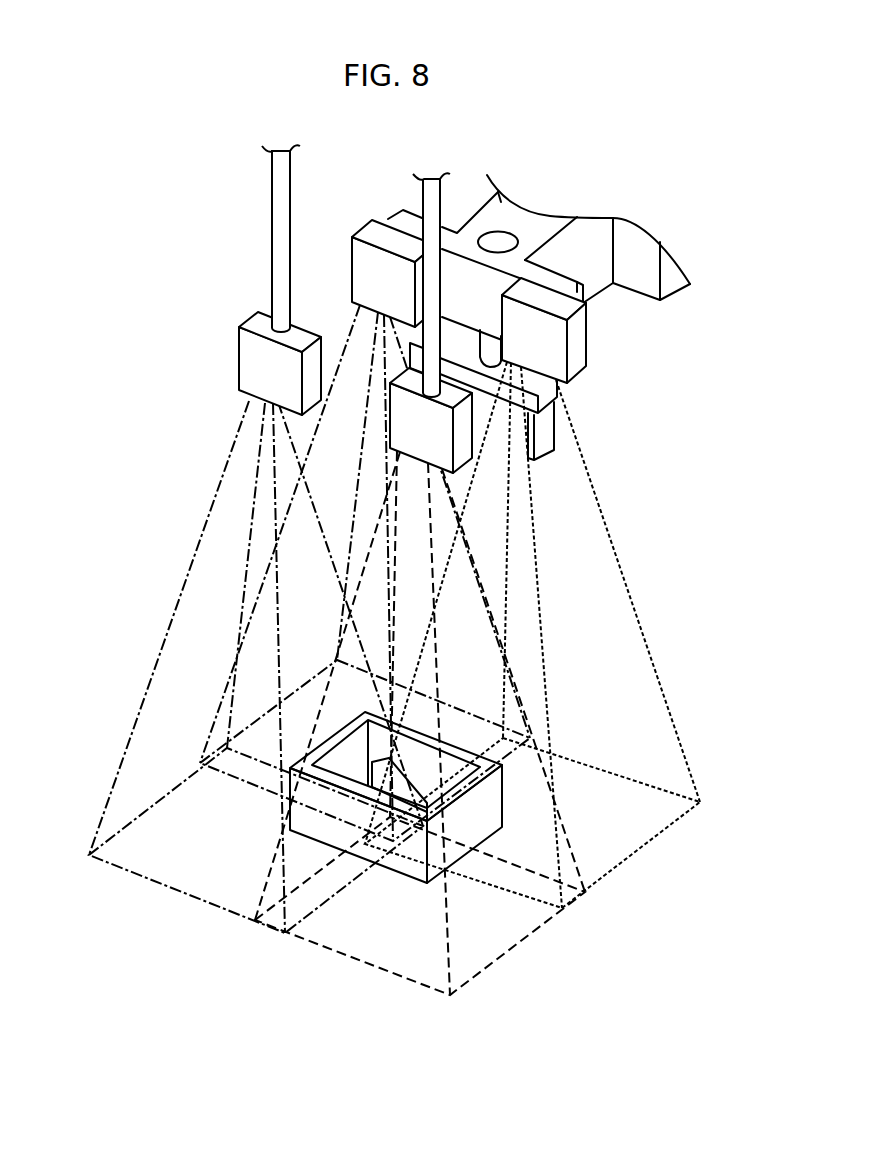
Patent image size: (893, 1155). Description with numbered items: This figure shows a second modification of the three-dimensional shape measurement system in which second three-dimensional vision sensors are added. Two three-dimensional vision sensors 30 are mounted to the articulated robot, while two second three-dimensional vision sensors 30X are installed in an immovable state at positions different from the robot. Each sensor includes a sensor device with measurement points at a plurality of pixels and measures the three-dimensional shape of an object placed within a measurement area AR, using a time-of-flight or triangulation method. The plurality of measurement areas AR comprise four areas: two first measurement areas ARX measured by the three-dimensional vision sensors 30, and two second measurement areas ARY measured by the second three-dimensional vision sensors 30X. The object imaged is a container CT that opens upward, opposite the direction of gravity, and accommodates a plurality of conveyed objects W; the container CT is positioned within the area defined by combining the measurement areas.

The three-dimensional vision sensor 30 is at (358, 258).
The second three-dimensional vision sensor 30X is at (248, 355).
The first measurement area ARX is at (308, 680).
The second measurement area ARY is at (148, 879).
The measurement area AR is at (572, 945).
The container CT is at (402, 860).
The conveyed object W is at (372, 762).